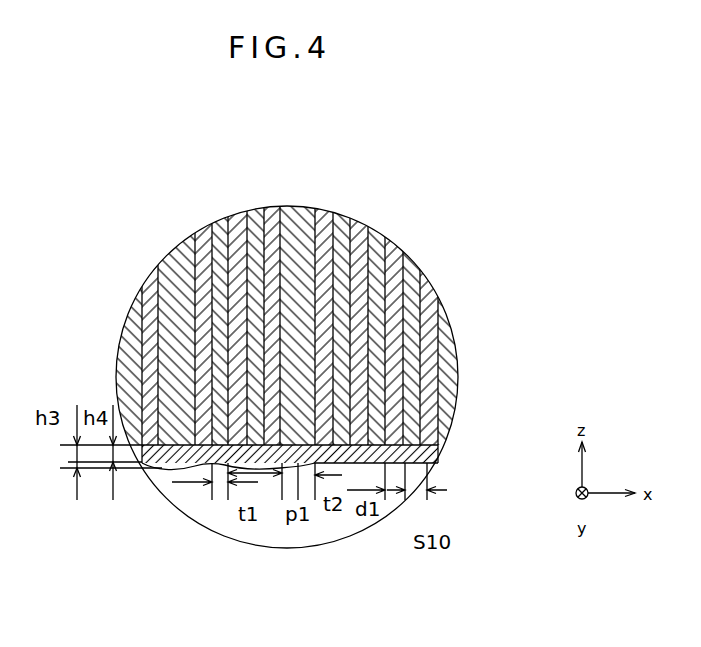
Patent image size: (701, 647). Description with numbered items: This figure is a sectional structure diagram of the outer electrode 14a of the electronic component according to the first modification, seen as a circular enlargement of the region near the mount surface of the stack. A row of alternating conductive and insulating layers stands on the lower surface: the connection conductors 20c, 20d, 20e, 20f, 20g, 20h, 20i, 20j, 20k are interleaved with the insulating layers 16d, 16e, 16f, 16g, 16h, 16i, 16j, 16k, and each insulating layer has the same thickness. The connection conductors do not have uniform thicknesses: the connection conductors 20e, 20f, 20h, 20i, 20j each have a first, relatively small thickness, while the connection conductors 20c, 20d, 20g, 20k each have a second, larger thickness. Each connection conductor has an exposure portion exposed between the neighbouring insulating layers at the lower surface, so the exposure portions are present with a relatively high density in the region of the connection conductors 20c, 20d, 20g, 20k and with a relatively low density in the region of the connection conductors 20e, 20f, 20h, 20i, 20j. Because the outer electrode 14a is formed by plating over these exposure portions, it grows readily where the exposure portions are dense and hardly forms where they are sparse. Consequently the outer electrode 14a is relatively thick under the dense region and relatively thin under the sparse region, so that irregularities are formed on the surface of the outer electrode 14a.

The outer electrode 14a is at (440, 461).
The insulating layer 16d is at (143, 305).
The insulating layer 16e is at (203, 233).
The insulating layer 16f is at (240, 220).
The insulating layer 16g is at (277, 210).
The insulating layer 16h is at (326, 216).
The insulating layer 16i is at (358, 224).
The insulating layer 16j is at (395, 241).
The insulating layer 16k is at (430, 292).
The connection conductor 20c is at (140, 320).
The connection conductor 20d is at (171, 252).
The connection conductor 20e is at (223, 217).
The connection conductor 20f is at (265, 203).
The connection conductor 20g is at (305, 213).
The connection conductor 20h is at (343, 219).
The connection conductor 20i is at (377, 231).
The connection conductor 20j is at (415, 265).
The connection conductor 20k is at (447, 340).